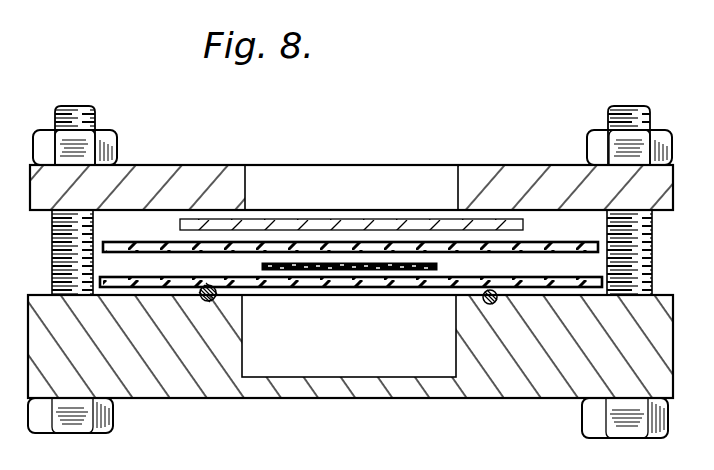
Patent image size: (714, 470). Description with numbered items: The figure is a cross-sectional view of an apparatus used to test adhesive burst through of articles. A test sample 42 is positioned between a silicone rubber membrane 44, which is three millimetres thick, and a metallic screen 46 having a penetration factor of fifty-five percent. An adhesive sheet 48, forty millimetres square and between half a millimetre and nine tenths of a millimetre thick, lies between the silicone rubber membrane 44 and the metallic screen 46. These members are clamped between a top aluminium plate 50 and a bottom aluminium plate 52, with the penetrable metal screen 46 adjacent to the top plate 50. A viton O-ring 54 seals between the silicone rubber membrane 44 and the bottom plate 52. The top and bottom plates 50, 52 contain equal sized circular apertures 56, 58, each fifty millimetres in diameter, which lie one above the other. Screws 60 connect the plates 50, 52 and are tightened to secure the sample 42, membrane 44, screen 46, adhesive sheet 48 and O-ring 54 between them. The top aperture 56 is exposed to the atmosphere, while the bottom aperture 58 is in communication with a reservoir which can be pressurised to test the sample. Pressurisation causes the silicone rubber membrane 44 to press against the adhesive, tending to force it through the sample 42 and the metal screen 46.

The test sample 42 is at (576, 250).
The silicone rubber membrane 44 is at (192, 275).
The metallic screen 46 is at (185, 222).
The adhesive sheet 48 is at (439, 267).
The top aluminium plate 50 is at (165, 180).
The bottom aluminium plate 52 is at (205, 372).
The viton O-ring 54 is at (216, 298).
The top circular aperture 56 is at (374, 182).
The bottom circular aperture 58 is at (315, 358).
The screws 60 is at (88, 112).